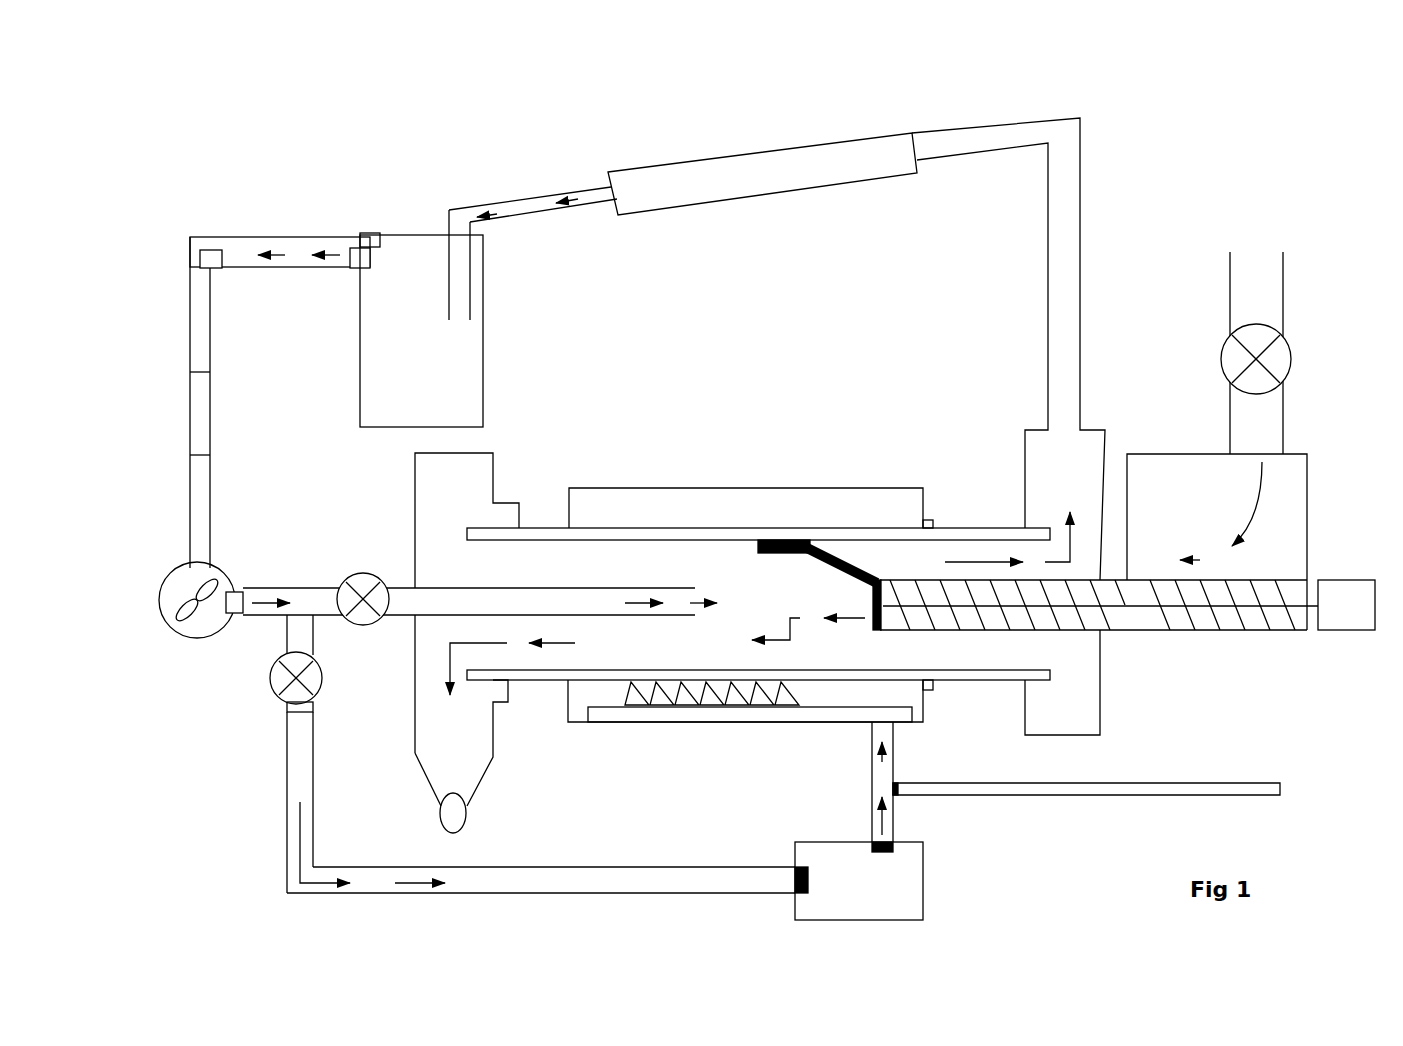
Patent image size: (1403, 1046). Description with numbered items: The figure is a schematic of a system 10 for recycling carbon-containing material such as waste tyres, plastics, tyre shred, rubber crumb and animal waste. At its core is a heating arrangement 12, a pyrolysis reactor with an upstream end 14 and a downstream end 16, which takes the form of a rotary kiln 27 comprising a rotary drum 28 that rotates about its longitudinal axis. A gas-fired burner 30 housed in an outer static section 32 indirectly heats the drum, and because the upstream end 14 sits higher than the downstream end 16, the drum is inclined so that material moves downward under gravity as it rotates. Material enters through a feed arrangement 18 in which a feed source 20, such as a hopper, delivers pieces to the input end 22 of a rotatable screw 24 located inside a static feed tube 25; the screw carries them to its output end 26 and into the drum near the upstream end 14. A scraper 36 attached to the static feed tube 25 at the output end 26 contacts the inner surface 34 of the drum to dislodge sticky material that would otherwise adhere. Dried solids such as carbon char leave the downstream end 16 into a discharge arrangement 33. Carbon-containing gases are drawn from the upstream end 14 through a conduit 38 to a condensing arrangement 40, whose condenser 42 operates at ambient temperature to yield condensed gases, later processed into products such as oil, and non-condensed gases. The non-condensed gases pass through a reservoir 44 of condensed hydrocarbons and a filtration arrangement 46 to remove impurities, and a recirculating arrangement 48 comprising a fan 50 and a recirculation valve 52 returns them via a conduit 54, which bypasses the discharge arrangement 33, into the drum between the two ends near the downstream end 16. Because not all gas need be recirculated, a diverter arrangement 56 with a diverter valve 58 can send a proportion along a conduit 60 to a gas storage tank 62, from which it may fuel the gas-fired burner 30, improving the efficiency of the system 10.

The system 10 is at (155, 862).
The heating arrangement 12 is at (720, 762).
The upstream end 14 is at (923, 452).
The downstream end 16 is at (590, 467).
The feed arrangement 18 is at (1099, 668).
The feed source 20 is at (1310, 505).
The input end 22 is at (1303, 657).
The rotatable screw 24 is at (1141, 610).
The static feed tube 25 is at (1167, 627).
The output end 26 is at (867, 645).
The rotary kiln 27 is at (798, 422).
The rotary drum 28 is at (758, 526).
The gas-fired burner 30 is at (660, 724).
The outer static section 32 is at (665, 502).
The discharge arrangement 33 is at (505, 777).
The inner surface 34 is at (687, 553).
The scraper 36 is at (797, 538).
The conduit 38 is at (1035, 426).
The condensing arrangement 40 is at (678, 163).
The condenser 42 is at (685, 192).
The reservoir 44 is at (464, 318).
The filtration arrangement 46 is at (228, 433).
The recirculating arrangement 48 is at (287, 550).
The fan 50 is at (162, 640).
The recirculation valve 52 is at (375, 548).
The conduit 54 is at (615, 597).
The diverter arrangement 56 is at (232, 783).
The diverter valve 58 is at (250, 693).
The conduit 60 is at (283, 862).
The gas storage tank 62 is at (927, 885).